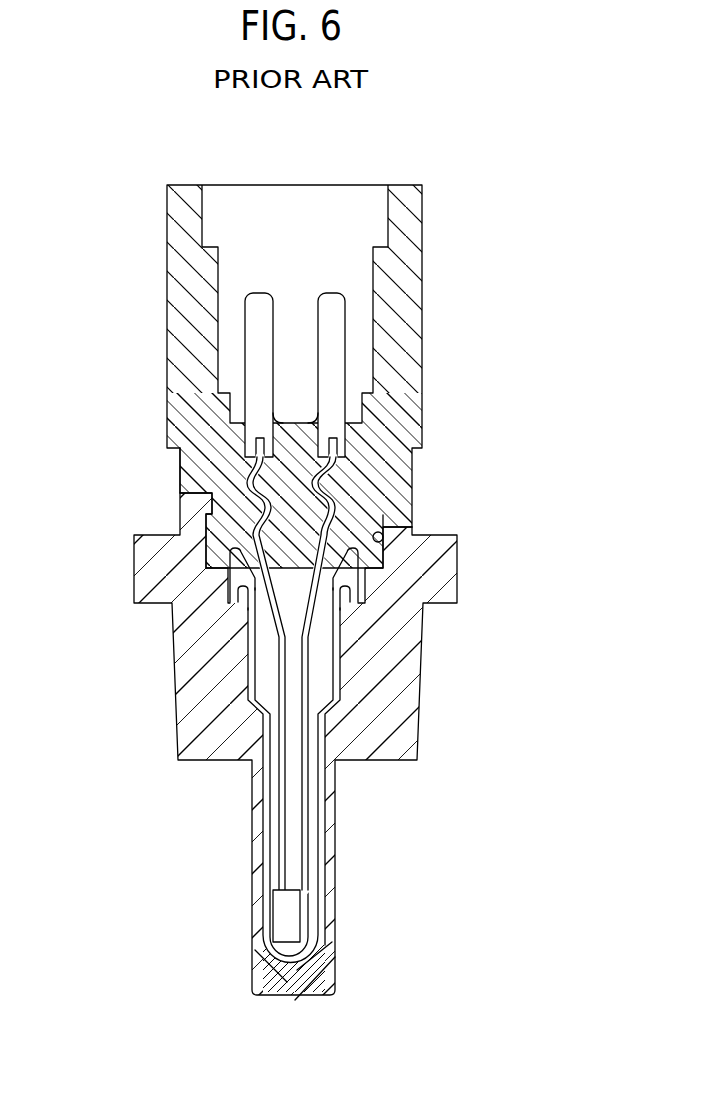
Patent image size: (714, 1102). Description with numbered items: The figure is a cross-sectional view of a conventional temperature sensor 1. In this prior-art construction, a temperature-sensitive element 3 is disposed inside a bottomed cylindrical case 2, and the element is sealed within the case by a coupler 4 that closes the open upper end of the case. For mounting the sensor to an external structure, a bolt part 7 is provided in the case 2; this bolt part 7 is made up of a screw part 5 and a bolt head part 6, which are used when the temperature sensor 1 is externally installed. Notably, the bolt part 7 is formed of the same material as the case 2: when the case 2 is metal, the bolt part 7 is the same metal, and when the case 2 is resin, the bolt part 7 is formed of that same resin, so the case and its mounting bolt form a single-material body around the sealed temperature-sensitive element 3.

The temperature sensor 1 is at (121, 231).
The bottomed cylindrical case 2 is at (188, 682).
The temperature-sensitive element 3 is at (270, 943).
The coupler 4 is at (400, 405).
The screw part 5 is at (413, 708).
The bolt head part 6 is at (396, 579).
The bolt part 7 is at (418, 755).